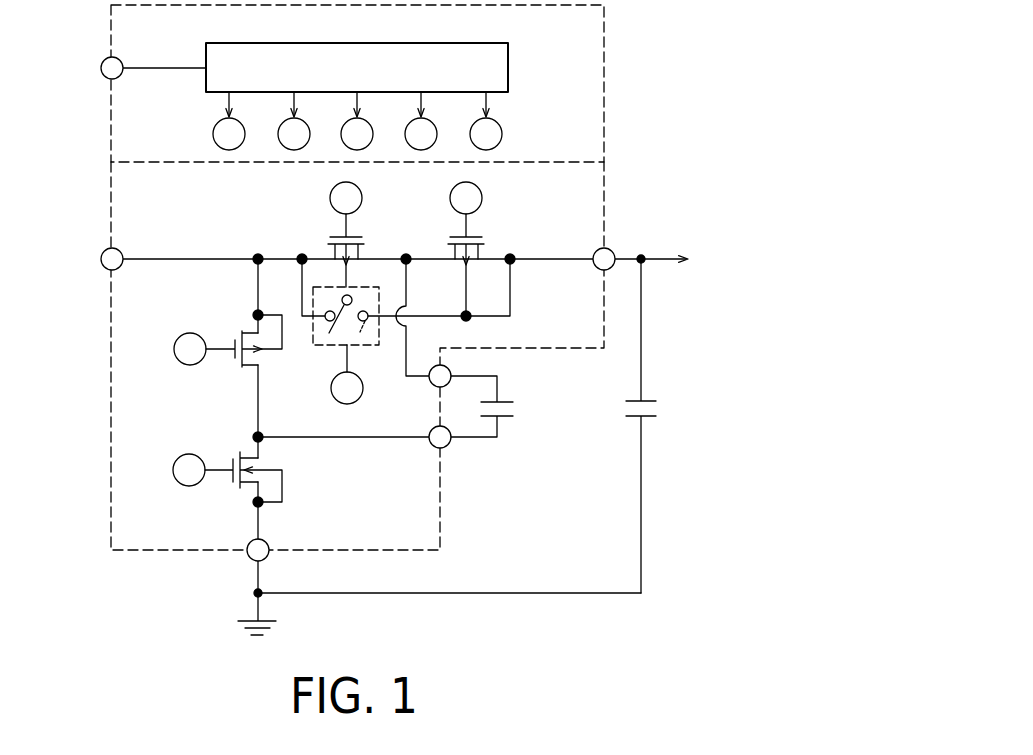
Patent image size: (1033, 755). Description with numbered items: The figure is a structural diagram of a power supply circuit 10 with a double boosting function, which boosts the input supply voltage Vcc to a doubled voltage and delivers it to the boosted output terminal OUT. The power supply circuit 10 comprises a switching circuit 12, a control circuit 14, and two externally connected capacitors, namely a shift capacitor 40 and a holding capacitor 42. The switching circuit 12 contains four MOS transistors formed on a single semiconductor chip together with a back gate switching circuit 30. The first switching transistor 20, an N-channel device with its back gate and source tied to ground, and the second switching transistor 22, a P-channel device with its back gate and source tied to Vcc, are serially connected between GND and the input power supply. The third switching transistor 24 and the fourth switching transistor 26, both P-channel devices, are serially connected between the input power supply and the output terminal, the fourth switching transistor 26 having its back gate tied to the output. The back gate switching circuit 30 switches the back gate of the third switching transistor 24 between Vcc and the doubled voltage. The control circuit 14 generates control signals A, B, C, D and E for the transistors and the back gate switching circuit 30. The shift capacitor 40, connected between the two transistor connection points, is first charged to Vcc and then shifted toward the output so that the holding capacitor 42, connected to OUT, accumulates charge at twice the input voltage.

The power supply circuit 10 is at (776, 110).
The switching circuit 12 is at (593, 202).
The control circuit 14 is at (595, 53).
The first switching transistor 20 is at (215, 446).
The second switching transistor 22 is at (222, 320).
The third switching transistor 24 is at (315, 246).
The fourth switching transistor 26 is at (516, 225).
The back gate switching circuit 30 is at (322, 347).
The shift capacitor 40 is at (525, 431).
The holding capacitor 42 is at (664, 428).